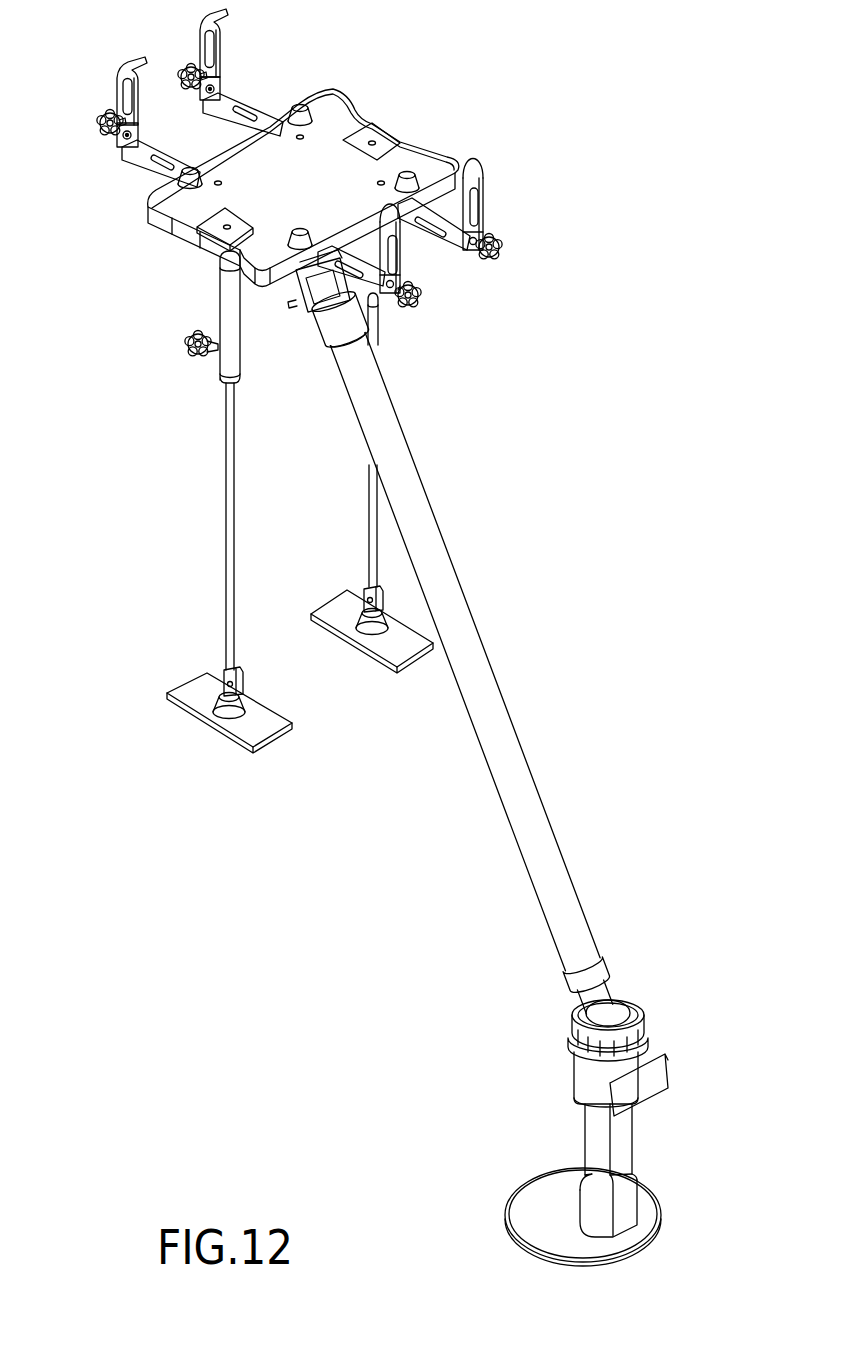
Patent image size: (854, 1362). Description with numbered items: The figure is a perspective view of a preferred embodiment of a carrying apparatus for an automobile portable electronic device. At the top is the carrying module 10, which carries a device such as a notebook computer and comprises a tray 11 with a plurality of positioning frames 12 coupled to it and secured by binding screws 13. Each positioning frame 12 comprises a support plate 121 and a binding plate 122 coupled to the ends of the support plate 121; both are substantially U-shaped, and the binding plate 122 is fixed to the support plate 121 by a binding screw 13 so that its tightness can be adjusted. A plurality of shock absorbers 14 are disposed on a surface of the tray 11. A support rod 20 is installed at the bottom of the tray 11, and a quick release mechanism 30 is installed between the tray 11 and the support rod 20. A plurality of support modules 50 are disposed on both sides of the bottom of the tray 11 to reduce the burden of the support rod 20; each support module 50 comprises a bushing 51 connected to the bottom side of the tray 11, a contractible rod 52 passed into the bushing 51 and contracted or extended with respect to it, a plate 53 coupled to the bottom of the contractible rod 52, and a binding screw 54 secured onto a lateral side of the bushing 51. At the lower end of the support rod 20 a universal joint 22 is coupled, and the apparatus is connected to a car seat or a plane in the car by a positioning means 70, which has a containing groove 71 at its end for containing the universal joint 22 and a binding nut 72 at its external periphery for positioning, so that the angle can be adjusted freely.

The carrying module 10 is at (388, 121).
The tray 11 is at (333, 113).
The positioning frame 12 is at (115, 131).
The support plate 121 is at (137, 153).
The binding plate 122 is at (117, 92).
The binding screw 13 is at (113, 117).
The shock absorber 14 is at (300, 103).
The support rod 20 is at (437, 513).
The universal joint 22 is at (600, 1016).
The quick release mechanism 30 is at (297, 292).
The support module 50 is at (200, 502).
The bushing 51 is at (223, 298).
The contractible rod 52 is at (226, 478).
The plate 53 is at (190, 692).
The binding screw 54 is at (188, 343).
The positioning means 70 is at (627, 1109).
The containing groove 71 is at (632, 998).
The binding nut 72 is at (650, 1017).